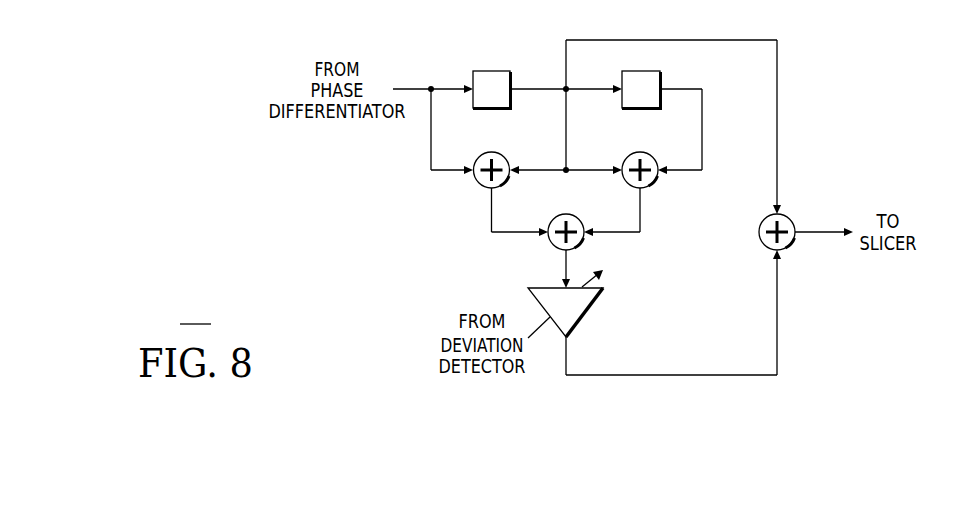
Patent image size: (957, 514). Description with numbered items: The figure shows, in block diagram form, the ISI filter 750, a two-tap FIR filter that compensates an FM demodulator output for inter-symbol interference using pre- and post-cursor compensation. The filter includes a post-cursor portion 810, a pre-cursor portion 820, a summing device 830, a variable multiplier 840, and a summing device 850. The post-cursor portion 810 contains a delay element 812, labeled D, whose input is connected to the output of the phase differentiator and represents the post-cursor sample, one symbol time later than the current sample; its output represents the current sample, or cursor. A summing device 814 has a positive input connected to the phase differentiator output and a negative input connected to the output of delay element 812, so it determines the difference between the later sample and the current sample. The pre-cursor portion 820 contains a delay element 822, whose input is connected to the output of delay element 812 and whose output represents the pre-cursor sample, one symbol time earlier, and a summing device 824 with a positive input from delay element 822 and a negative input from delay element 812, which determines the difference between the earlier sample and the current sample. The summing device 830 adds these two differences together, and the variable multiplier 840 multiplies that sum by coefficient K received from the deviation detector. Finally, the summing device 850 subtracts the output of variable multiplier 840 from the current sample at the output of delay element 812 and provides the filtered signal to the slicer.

The ISI filter 750 is at (195, 314).
The post-cursor portion 810 is at (450, 67).
The delay element 812 is at (491, 70).
The summing device 814 is at (474, 184).
The pre-cursor portion 820 is at (665, 34).
The delay element 822 is at (661, 74).
The summing device 824 is at (657, 184).
The summing device 830 is at (548, 245).
The variable multiplier 840 is at (588, 311).
The summing device 850 is at (760, 243).